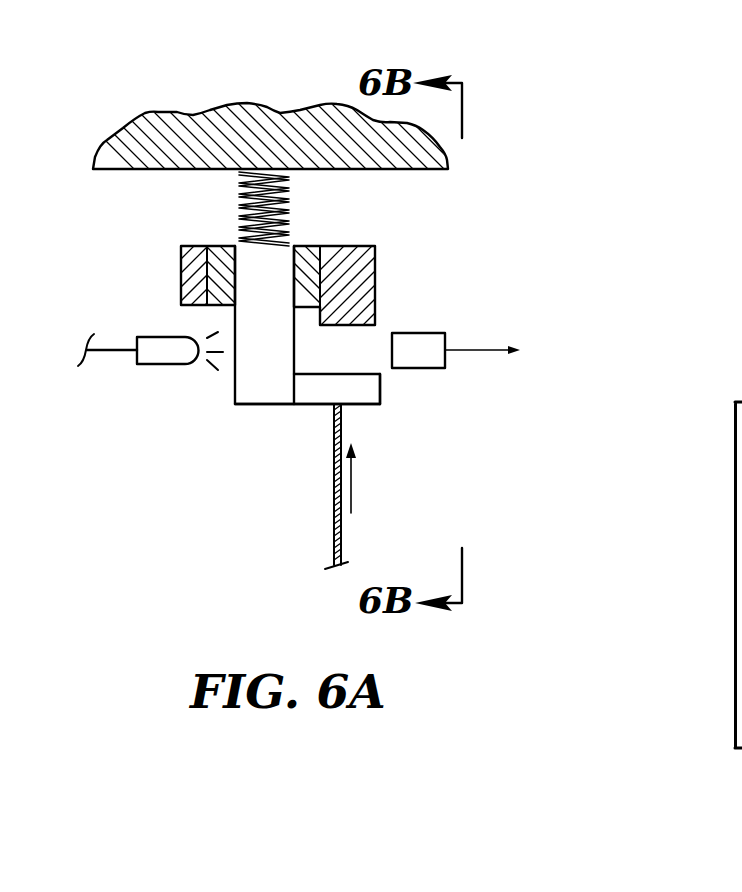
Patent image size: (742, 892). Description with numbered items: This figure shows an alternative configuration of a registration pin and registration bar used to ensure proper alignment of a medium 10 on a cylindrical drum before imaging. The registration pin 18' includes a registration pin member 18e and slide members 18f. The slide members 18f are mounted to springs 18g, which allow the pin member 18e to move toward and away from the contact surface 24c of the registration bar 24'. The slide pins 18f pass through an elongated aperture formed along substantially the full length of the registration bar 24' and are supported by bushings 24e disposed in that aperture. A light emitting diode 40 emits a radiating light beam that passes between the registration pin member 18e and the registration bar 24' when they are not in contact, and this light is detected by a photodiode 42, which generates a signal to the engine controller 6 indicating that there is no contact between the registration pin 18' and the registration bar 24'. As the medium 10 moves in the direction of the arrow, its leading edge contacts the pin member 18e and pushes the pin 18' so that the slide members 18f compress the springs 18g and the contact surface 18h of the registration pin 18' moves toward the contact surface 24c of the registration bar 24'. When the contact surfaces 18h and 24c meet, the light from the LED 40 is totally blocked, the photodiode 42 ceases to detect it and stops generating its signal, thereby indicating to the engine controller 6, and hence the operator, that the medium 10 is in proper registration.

The medium 10 is at (332, 518).
The registration pin 18' is at (344, 445).
The registration pin member 18e is at (365, 393).
The slide members 18f is at (243, 390).
The springs 18g is at (289, 213).
The contact surface of the registration pin 18h is at (355, 374).
The bushings 24e is at (218, 265).
The registration bar 24' is at (366, 301).
The contact surface of the registration bar 24c is at (353, 325).
The light emitting diode 40 is at (160, 352).
The photodiode 42 is at (428, 347).
The engine controller 6 is at (583, 351).